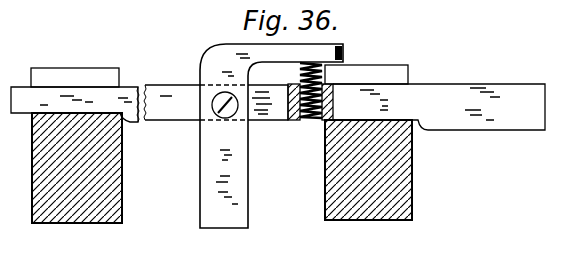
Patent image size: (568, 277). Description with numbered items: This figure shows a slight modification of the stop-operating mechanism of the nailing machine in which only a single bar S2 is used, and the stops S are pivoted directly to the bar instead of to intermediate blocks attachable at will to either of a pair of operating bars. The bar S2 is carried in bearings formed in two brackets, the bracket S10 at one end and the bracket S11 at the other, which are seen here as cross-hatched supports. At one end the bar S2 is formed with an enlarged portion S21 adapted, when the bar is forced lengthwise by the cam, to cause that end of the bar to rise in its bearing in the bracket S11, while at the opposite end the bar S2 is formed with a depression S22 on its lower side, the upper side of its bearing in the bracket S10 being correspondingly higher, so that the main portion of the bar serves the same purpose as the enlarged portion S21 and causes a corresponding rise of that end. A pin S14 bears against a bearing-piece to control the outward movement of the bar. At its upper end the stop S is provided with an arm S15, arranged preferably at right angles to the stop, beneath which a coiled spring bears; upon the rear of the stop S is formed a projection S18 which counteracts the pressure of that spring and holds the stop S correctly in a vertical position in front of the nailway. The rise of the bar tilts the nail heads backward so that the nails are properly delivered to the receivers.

The stop S is at (242, 159).
The bar S2 is at (216, 102).
The bracket S10 is at (68, 223).
The bracket S11 is at (362, 220).
The pin S14 is at (310, 101).
The arm S15 is at (268, 53).
The projection S18 is at (233, 118).
The enlarged portion S21 is at (439, 107).
The depression S22 is at (75, 95).